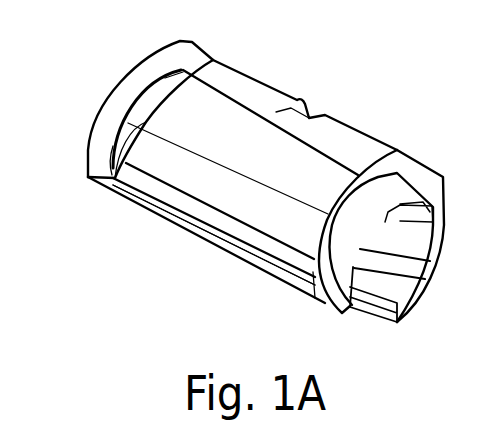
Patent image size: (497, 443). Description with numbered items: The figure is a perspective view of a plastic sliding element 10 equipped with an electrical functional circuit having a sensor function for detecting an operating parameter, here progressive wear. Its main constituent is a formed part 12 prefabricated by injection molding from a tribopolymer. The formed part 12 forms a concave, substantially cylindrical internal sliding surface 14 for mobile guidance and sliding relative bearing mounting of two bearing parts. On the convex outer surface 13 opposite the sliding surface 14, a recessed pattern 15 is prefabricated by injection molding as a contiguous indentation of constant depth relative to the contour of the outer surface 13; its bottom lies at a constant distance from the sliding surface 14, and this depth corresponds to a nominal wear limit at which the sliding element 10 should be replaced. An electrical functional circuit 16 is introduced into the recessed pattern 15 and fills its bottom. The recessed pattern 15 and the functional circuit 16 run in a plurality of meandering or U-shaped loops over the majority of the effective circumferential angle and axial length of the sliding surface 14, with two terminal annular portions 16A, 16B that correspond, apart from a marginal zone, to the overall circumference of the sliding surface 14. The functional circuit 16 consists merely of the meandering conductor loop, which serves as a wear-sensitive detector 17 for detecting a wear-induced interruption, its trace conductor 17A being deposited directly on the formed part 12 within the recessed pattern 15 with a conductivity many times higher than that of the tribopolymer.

The sliding element 10 is at (270, 67).
The formed part 12 is at (345, 145).
The outer surface 13 is at (195, 178).
The sliding surface 14 is at (383, 276).
The recessed pattern 15 is at (271, 247).
The electrical functional circuit 16 is at (213, 213).
The terminal annular portion 16A is at (110, 177).
The terminal annular portion 16B is at (313, 270).
The wear-sensitive detector 17 is at (152, 93).
The trace conductor 17A is at (130, 131).